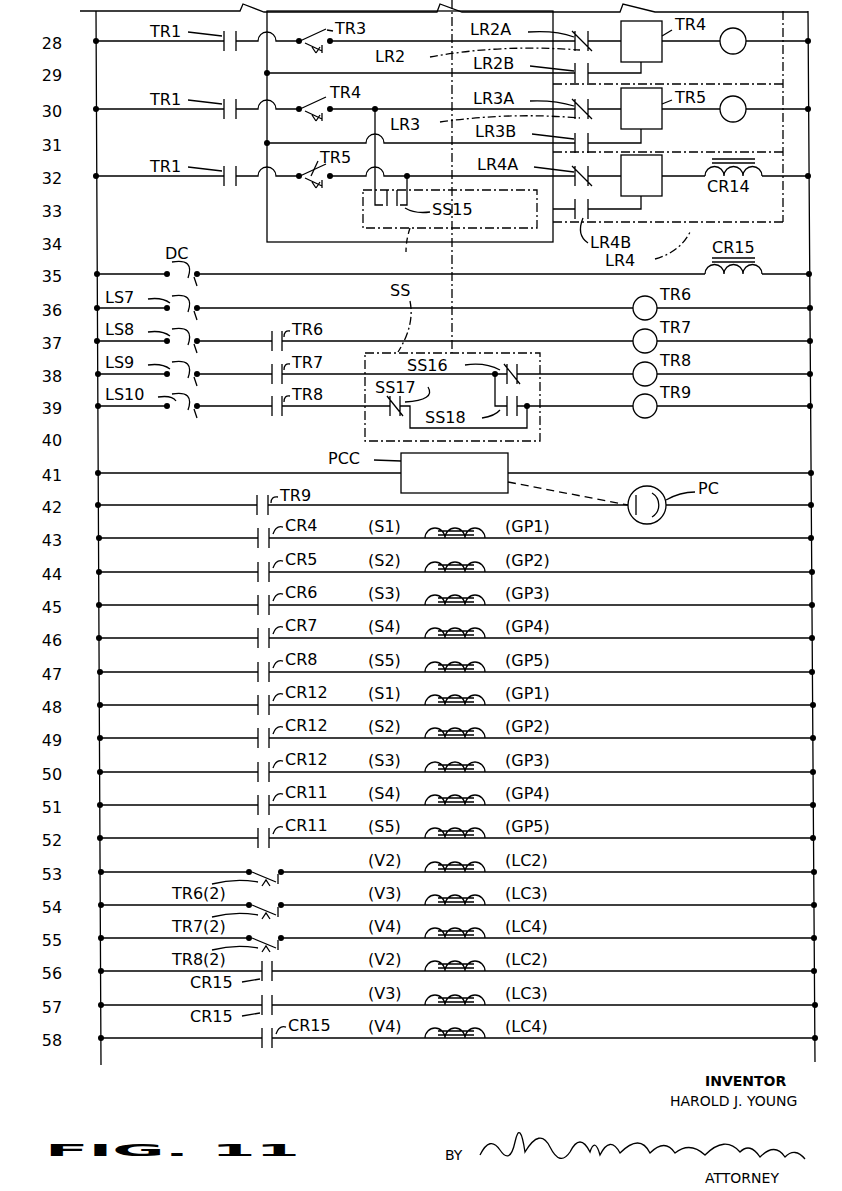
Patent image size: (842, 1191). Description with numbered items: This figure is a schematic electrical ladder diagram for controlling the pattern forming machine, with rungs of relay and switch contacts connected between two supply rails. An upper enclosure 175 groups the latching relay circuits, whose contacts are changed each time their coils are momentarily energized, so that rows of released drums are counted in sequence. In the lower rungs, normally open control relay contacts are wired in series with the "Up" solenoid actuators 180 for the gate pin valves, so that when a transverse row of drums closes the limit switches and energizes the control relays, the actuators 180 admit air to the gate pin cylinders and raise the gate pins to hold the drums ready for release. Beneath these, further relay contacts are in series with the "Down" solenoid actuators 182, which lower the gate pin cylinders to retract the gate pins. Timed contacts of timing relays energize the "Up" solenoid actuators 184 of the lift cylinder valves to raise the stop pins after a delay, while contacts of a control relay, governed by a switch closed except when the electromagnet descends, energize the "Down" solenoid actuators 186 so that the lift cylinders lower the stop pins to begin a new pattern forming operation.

The timing relay circuit enclosure 175 is at (267, 212).
The "Up" solenoid actuators 180 is at (480, 527).
The "Down" solenoid actuators 182 is at (480, 694).
The "Up" solenoid actuators 184 is at (480, 861).
The "Down" solenoid actuators 186 is at (480, 960).